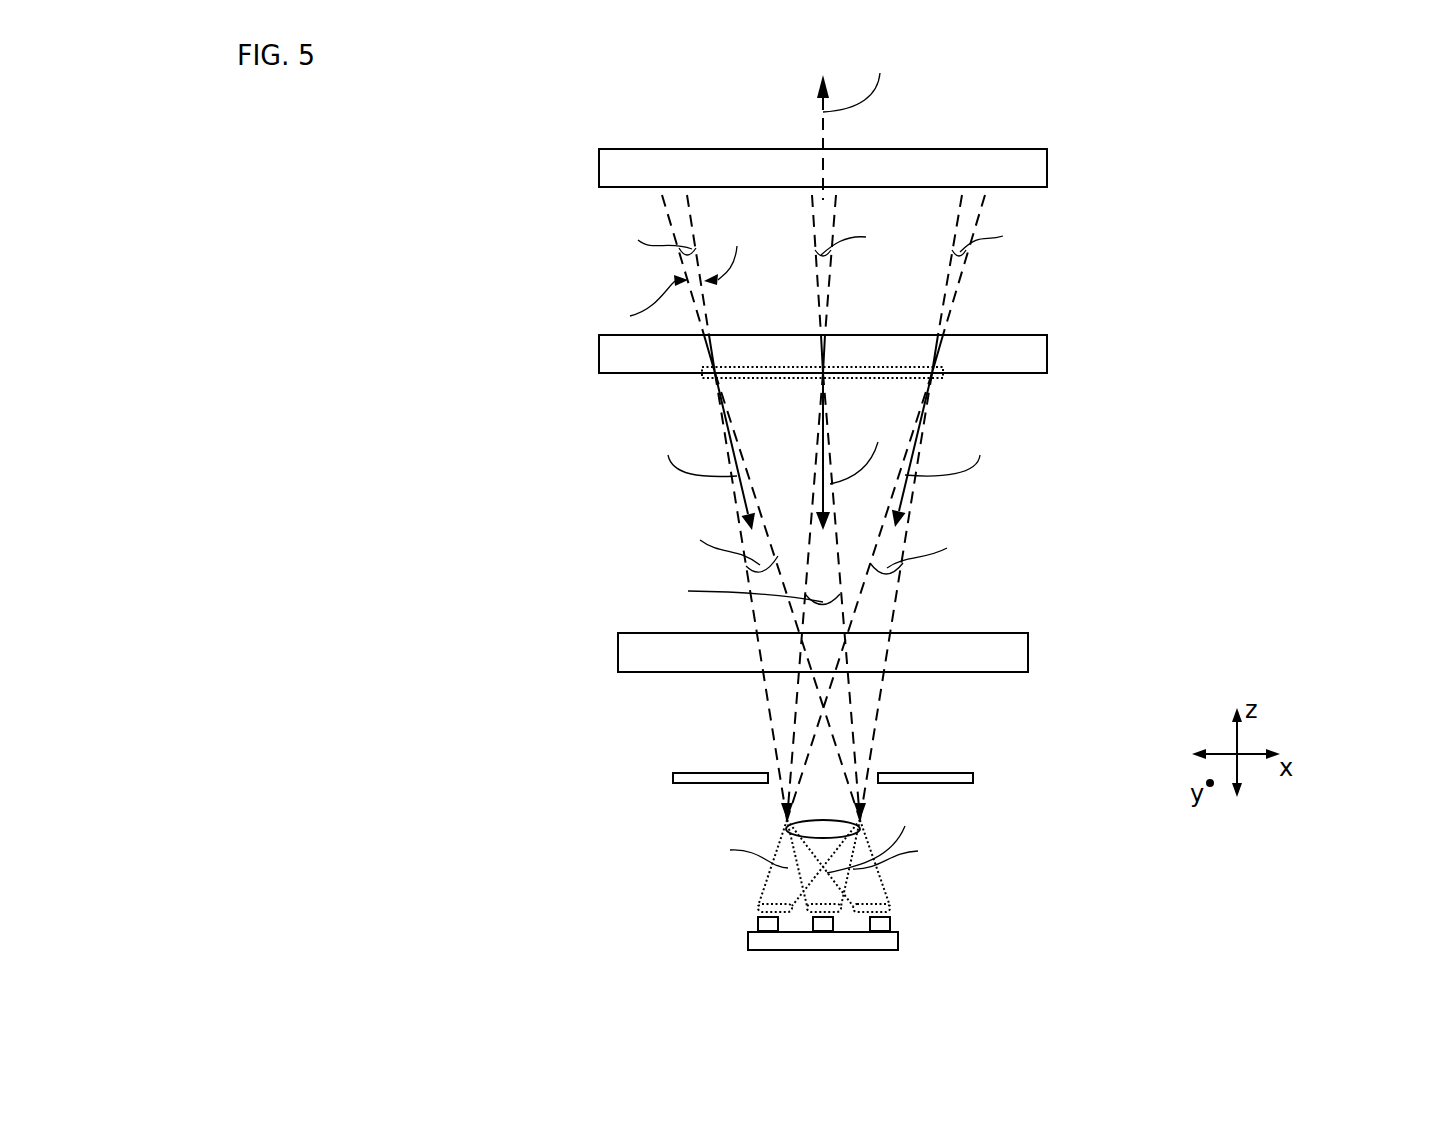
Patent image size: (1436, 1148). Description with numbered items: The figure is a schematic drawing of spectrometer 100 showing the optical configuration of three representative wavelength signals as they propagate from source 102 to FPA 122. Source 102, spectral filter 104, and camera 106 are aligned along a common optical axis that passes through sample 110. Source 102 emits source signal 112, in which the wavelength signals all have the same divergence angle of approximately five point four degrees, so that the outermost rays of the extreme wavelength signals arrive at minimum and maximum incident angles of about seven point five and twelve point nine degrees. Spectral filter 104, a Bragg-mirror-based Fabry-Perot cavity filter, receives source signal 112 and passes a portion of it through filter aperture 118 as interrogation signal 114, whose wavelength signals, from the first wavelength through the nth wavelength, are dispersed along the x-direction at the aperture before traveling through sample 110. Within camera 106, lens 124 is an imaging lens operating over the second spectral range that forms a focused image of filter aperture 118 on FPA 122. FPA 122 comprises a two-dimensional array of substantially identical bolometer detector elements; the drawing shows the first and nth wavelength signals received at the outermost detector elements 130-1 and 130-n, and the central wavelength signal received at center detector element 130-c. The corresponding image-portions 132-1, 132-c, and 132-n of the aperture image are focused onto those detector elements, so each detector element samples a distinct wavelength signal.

The spectrometer 100 is at (412, 129).
The source 102 is at (823, 168).
The spectral filter 104 is at (1168, 327).
The camera 106 is at (520, 820).
The sample 110 is at (874, 631).
The source signal 112 is at (522, 275).
The interrogation signal 114 is at (632, 487).
The filter aperture 118 is at (935, 378).
The FPA 122 is at (748, 940).
The lens 124 is at (808, 826).
The detector element 130-1 is at (890, 927).
The detector element 130-c is at (825, 932).
The detector element 130-n is at (770, 926).
The image-portion 132-1 is at (890, 908).
The image-portion 132-c is at (825, 903).
The image-portion 132-n is at (760, 908).